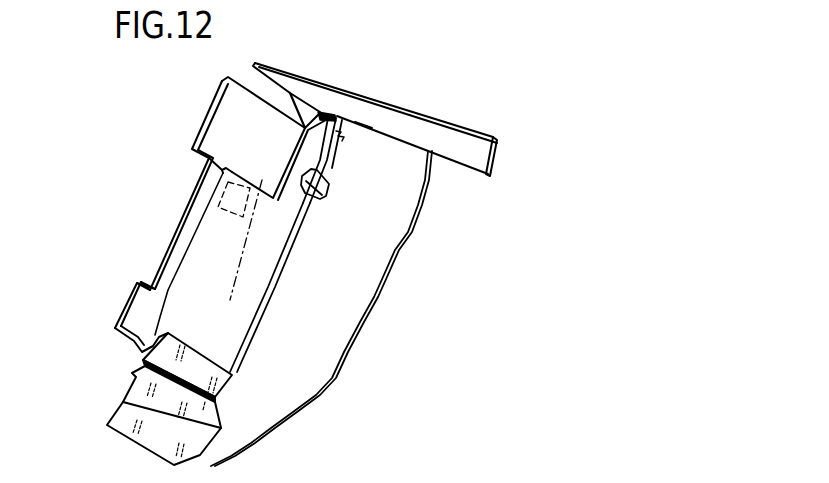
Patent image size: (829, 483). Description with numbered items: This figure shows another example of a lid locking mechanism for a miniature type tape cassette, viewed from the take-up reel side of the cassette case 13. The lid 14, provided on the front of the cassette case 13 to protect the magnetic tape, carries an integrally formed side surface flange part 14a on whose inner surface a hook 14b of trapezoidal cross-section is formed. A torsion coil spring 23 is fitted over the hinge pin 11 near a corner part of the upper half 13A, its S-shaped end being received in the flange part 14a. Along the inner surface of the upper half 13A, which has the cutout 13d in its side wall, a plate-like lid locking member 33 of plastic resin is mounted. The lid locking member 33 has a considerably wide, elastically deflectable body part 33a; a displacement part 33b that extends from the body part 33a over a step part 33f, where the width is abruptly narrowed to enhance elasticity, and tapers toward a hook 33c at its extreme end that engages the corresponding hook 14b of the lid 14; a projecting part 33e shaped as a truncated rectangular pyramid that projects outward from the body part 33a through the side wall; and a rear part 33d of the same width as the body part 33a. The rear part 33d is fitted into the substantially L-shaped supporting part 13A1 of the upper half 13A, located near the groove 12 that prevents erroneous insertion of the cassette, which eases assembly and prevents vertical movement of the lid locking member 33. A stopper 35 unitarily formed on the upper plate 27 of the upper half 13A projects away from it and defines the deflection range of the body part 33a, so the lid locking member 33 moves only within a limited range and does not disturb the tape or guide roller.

The hinge pin 11 is at (342, 142).
The groove 12 is at (128, 381).
The cassette case 13 is at (218, 125).
The upper half 13A is at (128, 308).
The supporting part 13A1 is at (217, 380).
The cutout 13d is at (149, 283).
The lid 14 is at (465, 112).
The flange part 14a is at (307, 93).
The hook 14b is at (310, 101).
The torsion coil spring 23 is at (362, 122).
The upper plate 27 is at (415, 185).
The lid locking member 33 is at (192, 242).
The body part 33a is at (260, 277).
The displacement part 33b is at (298, 196).
The hook 33c is at (322, 110).
The rear part 33d is at (150, 338).
The projecting part 33e is at (208, 193).
The step part 33f is at (256, 178).
The stopper 35 is at (326, 189).